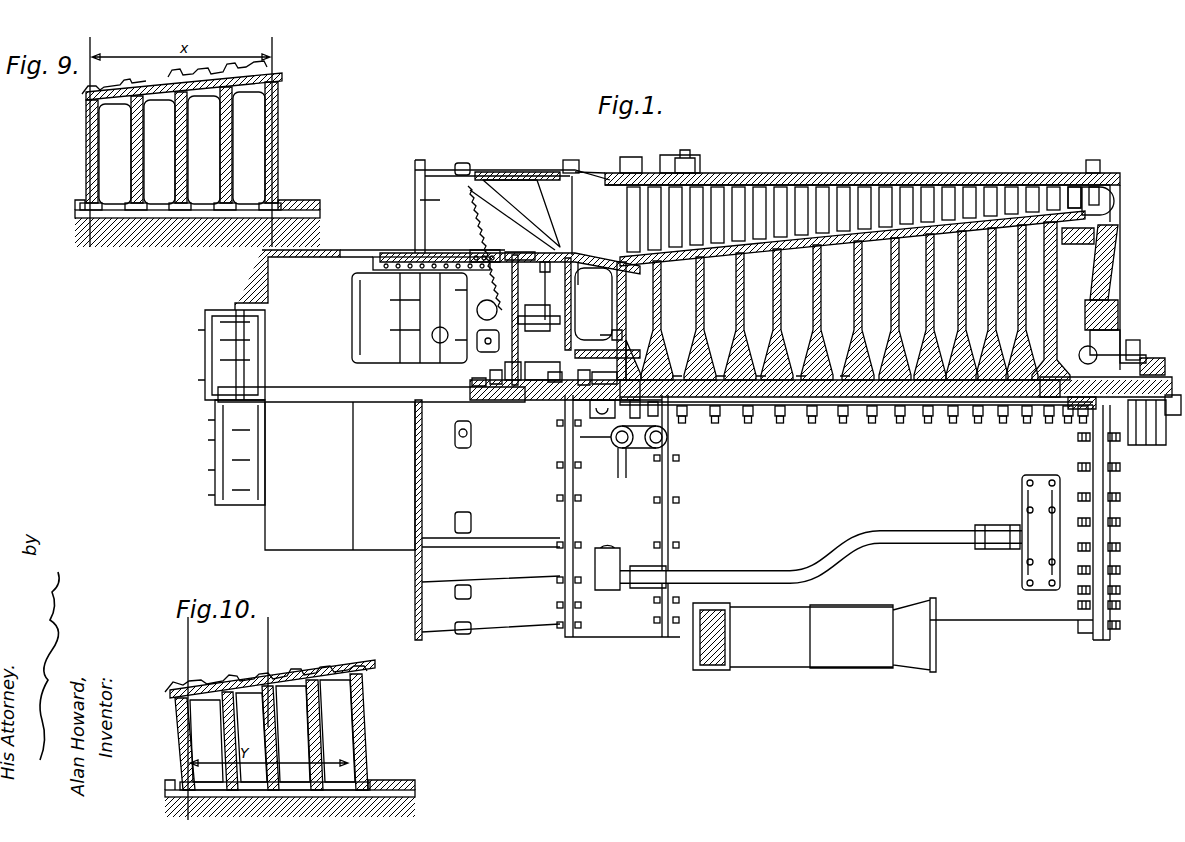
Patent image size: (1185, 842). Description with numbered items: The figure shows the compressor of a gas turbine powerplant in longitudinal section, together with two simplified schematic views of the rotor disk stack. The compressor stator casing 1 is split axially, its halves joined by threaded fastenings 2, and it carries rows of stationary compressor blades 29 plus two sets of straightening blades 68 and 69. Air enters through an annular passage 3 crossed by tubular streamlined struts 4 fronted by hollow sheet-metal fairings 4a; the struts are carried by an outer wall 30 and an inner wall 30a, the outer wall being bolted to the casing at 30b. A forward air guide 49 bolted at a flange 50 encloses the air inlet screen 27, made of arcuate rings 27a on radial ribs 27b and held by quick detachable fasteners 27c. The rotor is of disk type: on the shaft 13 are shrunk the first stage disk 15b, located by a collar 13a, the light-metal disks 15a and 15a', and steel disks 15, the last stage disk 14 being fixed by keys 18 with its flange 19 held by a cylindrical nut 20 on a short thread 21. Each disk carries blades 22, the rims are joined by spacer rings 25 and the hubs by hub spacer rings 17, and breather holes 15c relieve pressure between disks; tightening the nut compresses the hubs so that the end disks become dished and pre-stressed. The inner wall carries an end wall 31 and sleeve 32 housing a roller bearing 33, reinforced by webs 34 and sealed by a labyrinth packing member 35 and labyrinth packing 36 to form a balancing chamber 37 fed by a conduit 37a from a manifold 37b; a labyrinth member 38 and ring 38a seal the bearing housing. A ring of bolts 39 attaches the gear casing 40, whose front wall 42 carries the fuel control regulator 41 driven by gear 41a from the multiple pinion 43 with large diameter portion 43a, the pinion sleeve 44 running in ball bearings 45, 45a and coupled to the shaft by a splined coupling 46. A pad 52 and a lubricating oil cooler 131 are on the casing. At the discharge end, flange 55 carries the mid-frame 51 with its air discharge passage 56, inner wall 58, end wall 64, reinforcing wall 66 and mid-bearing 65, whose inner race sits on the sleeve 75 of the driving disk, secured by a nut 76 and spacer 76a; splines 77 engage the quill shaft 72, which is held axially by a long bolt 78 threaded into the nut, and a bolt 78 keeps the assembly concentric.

In FIG. 1, the compressor stator casing 1 is at (784, 178).
In FIG. 1, the threaded fastenings 2 is at (900, 428).
In FIG. 1, the annular passage 3 is at (415, 216).
In FIG. 1, the tubular streamlined struts 4 is at (585, 180).
In FIG. 1, the hollow sheet-metal fairings 4a is at (438, 198).
In FIG. 9, the shaft 13 is at (70, 216).
In FIG. 10, the shaft 13 is at (165, 790).
In FIG. 1, the shaft 13 is at (828, 404).
In FIG. 9, the collar 13a is at (78, 208).
In FIG. 10, the collar 13a is at (176, 788).
In FIG. 1, the collar 13a is at (648, 364).
In FIG. 9, the last stage disk 14 is at (265, 150).
In FIG. 10, the last stage disk 14 is at (362, 698).
In FIG. 1, the last stage disk 14 is at (1057, 305).
In FIG. 9, the disks 15 is at (220, 150).
In FIG. 10, the disks 15 is at (310, 708).
In FIG. 1, the disks 15 is at (914, 318).
In FIG. 9, the disks adjacent the inlet end 15a is at (168, 151).
In FIG. 10, the disks adjacent the inlet end 15a is at (215, 741).
In FIG. 1, the disks adjacent the inlet end 15a is at (757, 316).
In FIG. 9, the disk 15a' is at (123, 153).
In FIG. 10, the disk 15a' is at (255, 738).
In FIG. 9, the first stage disk 15b is at (86, 150).
In FIG. 10, the first stage disk 15b is at (180, 720).
In FIG. 1, the first stage disk 15b is at (662, 318).
In FIG. 1, the balancing or breather holes 15c is at (930, 286).
In FIG. 9, the hub spacer rings 17 is at (162, 204).
In FIG. 10, the hub spacer rings 17 is at (208, 768).
In FIG. 1, the hub spacer rings 17 is at (786, 372).
In FIG. 1, the spline or keys 18 is at (1046, 370).
In FIG. 1, the annular inwardly projecting flange 19 is at (1068, 396).
In FIG. 9, the cylindrical nut 20 is at (310, 200).
In FIG. 10, the cylindrical nut 20 is at (394, 782).
In FIG. 1, the cylindrical nut 20 is at (1171, 406).
In FIG. 1, the short thread 21 is at (1085, 404).
In FIG. 9, the blades 22 is at (120, 92).
In FIG. 10, the blades 22 is at (220, 665).
In FIG. 1, the blades 22 is at (954, 180).
In FIG. 9, the spacer rings 25 is at (179, 96).
In FIG. 10, the spacer rings 25 is at (288, 658).
In FIG. 1, the spacer rings 25 is at (815, 248).
In FIG. 1, the air inlet screen 27 is at (505, 212).
In FIG. 1, the sectional arcuate rings 27a is at (478, 196).
In FIG. 1, the radial ribs 27b is at (544, 200).
In FIG. 1, the quick detachable fasteners 27c is at (466, 163).
In FIG. 1, the stationary compressor blades 29 is at (754, 182).
In FIG. 1, the outer wall 30 is at (626, 173).
In FIG. 1, the inner wall 30a is at (596, 260).
In FIG. 1, the flange joint 30b is at (668, 156).
In FIG. 1, the end wall 31 is at (603, 318).
In FIG. 1, the sleeve 32 is at (582, 310).
In FIG. 1, the roller bearing 33 is at (605, 416).
In FIG. 1, the radially extending webs 34 is at (580, 256).
In FIG. 1, the labyrinth packing member 35 is at (622, 321).
In FIG. 1, the labyrinth type packing 36 is at (628, 266).
In FIG. 1, the balancing chamber 37 is at (644, 304).
In FIG. 1, the conduit 37a is at (912, 530).
In FIG. 1, the manifold 37b is at (1044, 588).
In FIG. 1, the labyrinth member 38 is at (638, 408).
In FIG. 1, the ring 38a is at (652, 415).
In FIG. 1, the ring of bolts 39 is at (505, 254).
In FIG. 1, the gear casing 40 is at (506, 250).
In FIG. 1, the hydraulic fuel control regulator 41 is at (352, 292).
In FIG. 1, the gear 41a is at (518, 280).
In FIG. 1, the front wall 42 is at (544, 300).
In FIG. 1, the multiple pinion 43 is at (515, 386).
In FIG. 1, the large diameter portion 43a is at (539, 317).
In FIG. 1, the sleeve 44 is at (500, 386).
In FIG. 1, the ball bearing 45 is at (486, 388).
In FIG. 1, the ball bearing 45a is at (594, 372).
In FIG. 1, the toothed or splined coupling 46 is at (556, 386).
In FIG. 1, the forward air guide 49 is at (516, 172).
In FIG. 1, the flange 50 is at (572, 160).
In FIG. 1, the mid-frame 51 is at (1120, 182).
In FIG. 1, the pad 52 is at (614, 446).
In FIG. 1, the flange 55 is at (1098, 152).
In FIG. 1, the annular air discharge passage 56 is at (1110, 206).
In FIG. 1, the inner annular wall 58 is at (1094, 236).
In FIG. 1, the end wall 64 is at (1108, 264).
In FIG. 1, the mid-bearing 65 is at (1118, 342).
In FIG. 1, the axially extending wall 66 is at (1118, 304).
In FIG. 1, the stationary blades 68 is at (1068, 190).
In FIG. 1, the stationary blades 69 is at (1090, 190).
In FIG. 1, the quill shaft 72 is at (1168, 368).
In FIG. 1, the outer axially extending sleeve 75 is at (1140, 348).
In FIG. 1, the nut 76 is at (1150, 428).
In FIG. 1, the spacer 76a is at (1141, 350).
In FIG. 1, the splines 77 is at (1093, 355).
In FIG. 1, the long bolt 78 is at (1028, 522).
In FIG. 1, the lubricating oil cooler 131 is at (768, 658).